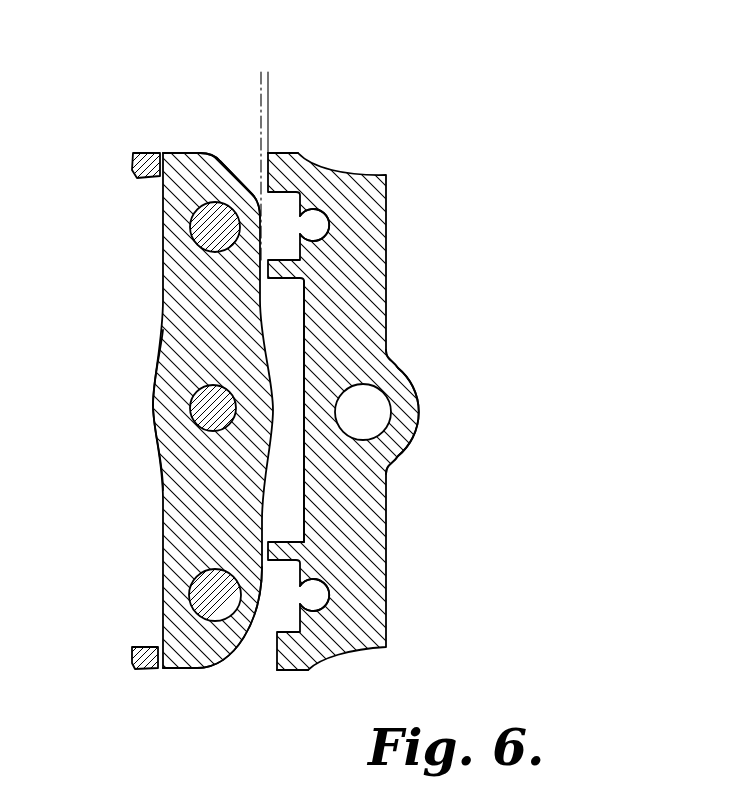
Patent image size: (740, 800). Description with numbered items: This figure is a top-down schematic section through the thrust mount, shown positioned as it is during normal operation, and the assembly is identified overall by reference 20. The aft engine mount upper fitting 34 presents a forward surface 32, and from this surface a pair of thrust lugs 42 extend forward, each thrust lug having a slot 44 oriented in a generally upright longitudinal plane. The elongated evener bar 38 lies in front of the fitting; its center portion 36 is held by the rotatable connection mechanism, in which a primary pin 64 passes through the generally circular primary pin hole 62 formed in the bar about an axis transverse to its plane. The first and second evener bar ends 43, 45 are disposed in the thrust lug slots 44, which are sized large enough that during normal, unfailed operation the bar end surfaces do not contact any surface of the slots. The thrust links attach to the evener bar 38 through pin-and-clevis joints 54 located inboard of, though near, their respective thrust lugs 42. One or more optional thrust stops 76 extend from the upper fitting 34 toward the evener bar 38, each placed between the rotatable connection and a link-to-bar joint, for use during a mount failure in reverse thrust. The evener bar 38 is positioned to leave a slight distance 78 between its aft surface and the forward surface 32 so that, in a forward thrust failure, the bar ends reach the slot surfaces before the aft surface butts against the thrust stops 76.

The hub assembly 20 is at (445, 176).
The forward surface 32 is at (298, 343).
The aft engine mount upper fitting 34 is at (420, 410).
The center portion 36 is at (153, 405).
The evener bar 38 is at (173, 308).
The thrust lugs 42 is at (132, 158).
The first evener bar end 43 is at (195, 184).
The slot 44 is at (163, 153).
The second evener bar end 45 is at (192, 670).
The pin-and-clevis joints 54 is at (190, 227).
The primary pin hole 62 is at (190, 389).
The primary pin 64 is at (197, 432).
The thrust stops 76 is at (298, 258).
The slight distance 78 is at (258, 82).